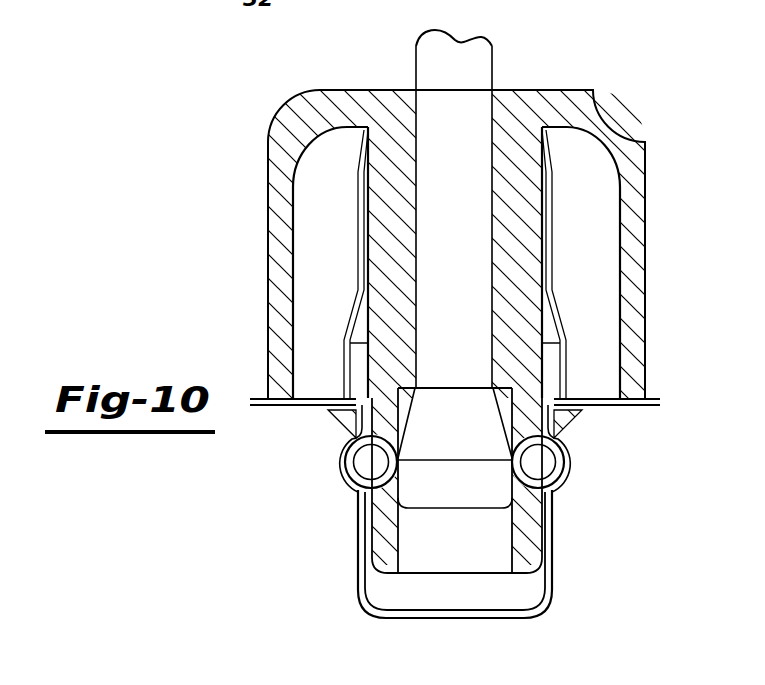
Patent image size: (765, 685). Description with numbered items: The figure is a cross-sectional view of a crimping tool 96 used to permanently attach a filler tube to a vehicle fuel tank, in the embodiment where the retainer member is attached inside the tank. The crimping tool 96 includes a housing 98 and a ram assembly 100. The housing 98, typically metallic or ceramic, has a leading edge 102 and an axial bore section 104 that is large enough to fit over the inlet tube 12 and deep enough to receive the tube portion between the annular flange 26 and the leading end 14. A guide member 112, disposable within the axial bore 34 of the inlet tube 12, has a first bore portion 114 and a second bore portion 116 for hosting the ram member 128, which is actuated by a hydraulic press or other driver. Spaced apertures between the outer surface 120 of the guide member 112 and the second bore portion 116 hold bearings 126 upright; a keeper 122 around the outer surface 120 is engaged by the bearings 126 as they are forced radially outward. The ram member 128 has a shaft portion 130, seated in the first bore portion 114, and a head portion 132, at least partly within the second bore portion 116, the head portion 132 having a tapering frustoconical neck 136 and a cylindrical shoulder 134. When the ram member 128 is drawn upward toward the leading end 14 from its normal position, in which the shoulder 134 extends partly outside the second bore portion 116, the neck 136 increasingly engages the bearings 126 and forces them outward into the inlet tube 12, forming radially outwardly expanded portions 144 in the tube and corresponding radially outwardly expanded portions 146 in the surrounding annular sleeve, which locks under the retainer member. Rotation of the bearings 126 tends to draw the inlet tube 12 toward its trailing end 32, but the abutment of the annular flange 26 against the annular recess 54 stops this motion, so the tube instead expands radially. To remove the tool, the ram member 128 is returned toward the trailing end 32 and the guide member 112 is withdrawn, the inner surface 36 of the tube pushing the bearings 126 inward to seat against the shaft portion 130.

The crimping tool 96 is at (642, 126).
The housing 98 is at (302, 112).
The ram assembly 100 is at (493, 56).
The shaft portion 130 is at (416, 70).
The leading end 14 is at (550, 130).
The inlet tube 12 is at (565, 189).
The axial bore section 104 is at (322, 166).
The guide member 112 is at (532, 268).
The first bore portion 114 is at (494, 237).
The ram member 128 is at (438, 268).
The second bore portion 116 is at (352, 387).
The annular flange 26 is at (588, 397).
The axial bore 34 is at (556, 332).
The leading edge 102 is at (292, 405).
The annular recess 54 is at (576, 420).
The frustoconical shaped neck 136 is at (506, 441).
The head portion 132 is at (490, 499).
The radially outwardly expanded portions 144 is at (366, 474).
The keeper 122 is at (556, 491).
The radially outwardly expanded portions 146 is at (346, 441).
The bearings 126 is at (556, 469).
The shoulder 134 is at (364, 502).
The outer surface 120 is at (356, 552).
The inner surface 36 is at (549, 588).
The trailing end 32 is at (510, 619).